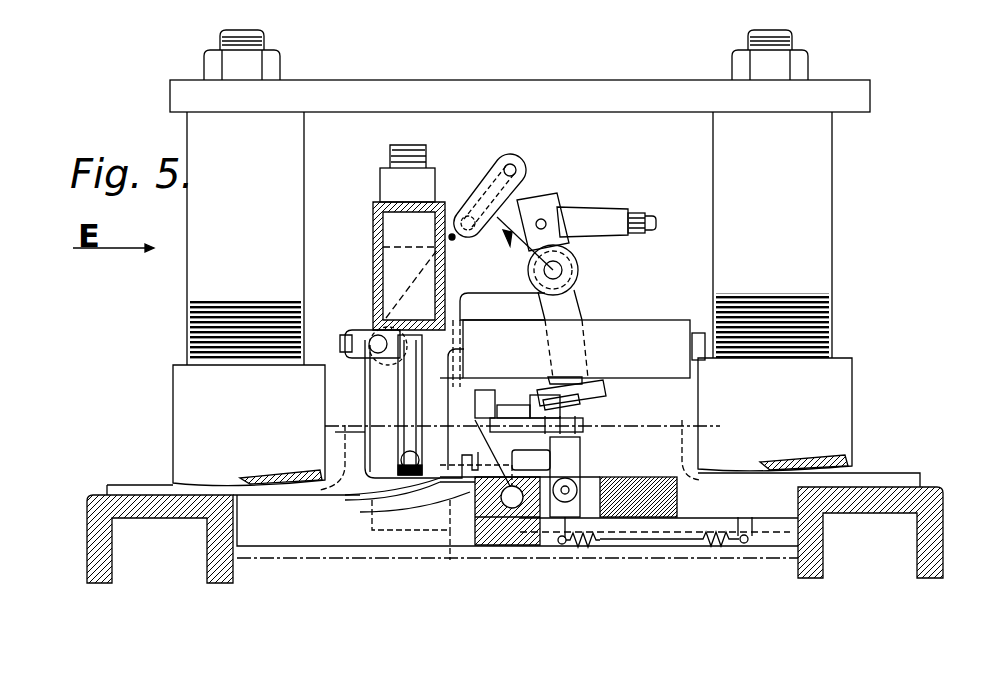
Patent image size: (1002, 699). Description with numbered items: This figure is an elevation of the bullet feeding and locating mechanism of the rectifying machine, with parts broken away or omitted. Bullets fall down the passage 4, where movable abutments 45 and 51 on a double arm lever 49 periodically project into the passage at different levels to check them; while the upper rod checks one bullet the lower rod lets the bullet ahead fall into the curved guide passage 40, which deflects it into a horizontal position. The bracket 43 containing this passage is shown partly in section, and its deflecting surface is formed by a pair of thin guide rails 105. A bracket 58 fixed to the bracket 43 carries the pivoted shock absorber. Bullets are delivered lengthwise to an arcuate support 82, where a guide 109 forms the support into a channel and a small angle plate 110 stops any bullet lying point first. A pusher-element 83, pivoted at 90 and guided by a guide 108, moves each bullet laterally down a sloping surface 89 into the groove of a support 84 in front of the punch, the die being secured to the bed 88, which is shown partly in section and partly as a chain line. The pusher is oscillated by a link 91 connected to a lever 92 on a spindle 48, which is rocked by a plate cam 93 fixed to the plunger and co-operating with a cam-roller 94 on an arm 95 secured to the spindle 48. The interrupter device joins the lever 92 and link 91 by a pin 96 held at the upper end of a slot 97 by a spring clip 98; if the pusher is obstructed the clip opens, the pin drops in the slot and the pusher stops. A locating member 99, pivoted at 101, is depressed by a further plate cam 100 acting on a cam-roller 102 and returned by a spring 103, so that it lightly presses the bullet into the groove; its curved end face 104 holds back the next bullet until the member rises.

The passage 4 is at (393, 150).
The pin 96 is at (440, 200).
The link 91 is at (487, 183).
The spring clip 98 is at (492, 172).
The lever 92 is at (497, 227).
The movable abutment 45 is at (603, 220).
The bracket 43 is at (375, 235).
The slot 97 is at (450, 237).
The spindle 48 is at (562, 272).
The double arm lever 49 is at (578, 306).
The bracket 58 is at (458, 393).
The end face 104 is at (493, 412).
The plate cam 93 is at (503, 403).
The arm 95 is at (585, 358).
The movable abutment 51 is at (702, 350).
The cam-roller 94 is at (606, 392).
The plate cam 100 is at (575, 432).
The locating member 99 is at (560, 468).
The cam-roller 102 is at (685, 430).
The curved guide passage 40 is at (395, 405).
The guide rails 105 is at (345, 434).
The bed 88 is at (237, 494).
The pivot 90 is at (405, 360).
The guide 108 is at (380, 487).
The angle plate 110 is at (375, 488).
The arcuate support 82 is at (393, 482).
The pusher-element 83 is at (443, 480).
The guide 109 is at (421, 546).
The sloping surface 89 is at (493, 548).
The support 84 is at (501, 543).
The pivot 101 is at (583, 505).
The spring 103 is at (657, 545).